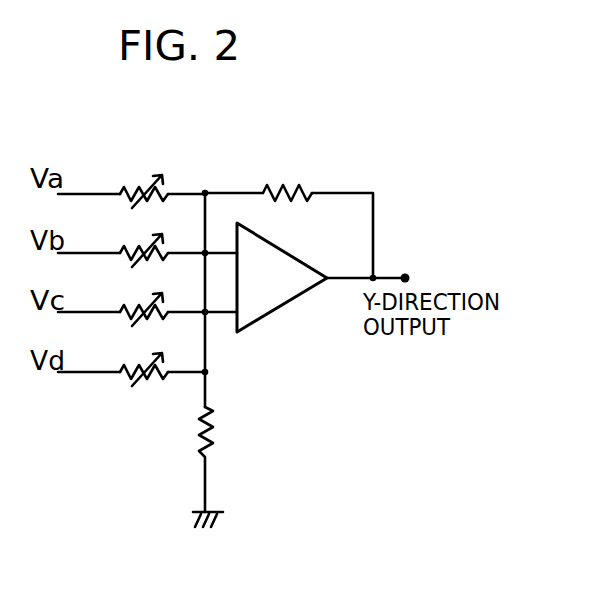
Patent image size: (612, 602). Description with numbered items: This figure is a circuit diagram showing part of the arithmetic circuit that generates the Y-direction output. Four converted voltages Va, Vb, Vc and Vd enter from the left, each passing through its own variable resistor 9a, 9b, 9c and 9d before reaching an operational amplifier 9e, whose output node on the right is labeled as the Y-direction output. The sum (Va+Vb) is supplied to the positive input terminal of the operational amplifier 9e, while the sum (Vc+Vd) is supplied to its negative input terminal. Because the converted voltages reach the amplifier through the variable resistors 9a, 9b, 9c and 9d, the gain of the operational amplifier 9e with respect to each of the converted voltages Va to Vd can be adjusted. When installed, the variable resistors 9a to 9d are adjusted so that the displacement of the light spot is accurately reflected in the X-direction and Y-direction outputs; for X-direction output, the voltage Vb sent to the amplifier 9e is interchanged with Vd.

The variable resistor 9a is at (143, 193).
The variable resistor 9b is at (148, 242).
The variable resistor 9c is at (147, 303).
The variable resistor 9d is at (147, 362).
The operational amplifier 9e is at (265, 297).